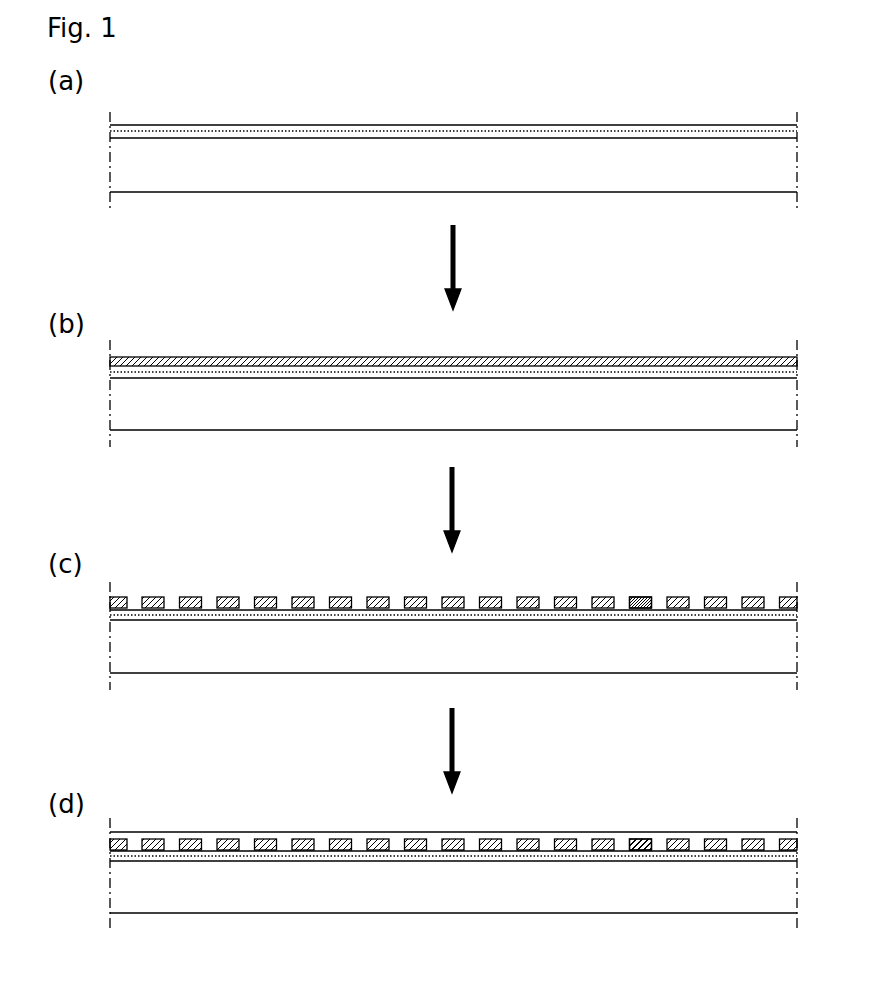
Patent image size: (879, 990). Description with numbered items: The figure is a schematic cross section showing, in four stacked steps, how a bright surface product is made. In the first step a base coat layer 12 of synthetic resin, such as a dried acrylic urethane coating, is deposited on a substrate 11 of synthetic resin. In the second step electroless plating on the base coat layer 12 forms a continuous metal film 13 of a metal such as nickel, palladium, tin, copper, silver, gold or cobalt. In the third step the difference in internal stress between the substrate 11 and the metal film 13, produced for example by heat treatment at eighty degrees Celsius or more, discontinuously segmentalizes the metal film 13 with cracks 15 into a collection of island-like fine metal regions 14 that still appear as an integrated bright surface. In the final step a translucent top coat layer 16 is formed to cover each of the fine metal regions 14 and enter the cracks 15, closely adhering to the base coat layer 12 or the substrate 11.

The substrate 11 is at (217, 184).
The base coat layer 12 is at (658, 137).
The metal film 13 is at (600, 358).
The fine metal regions 14 is at (600, 597).
The cracks 15 is at (658, 597).
The top coat layer 16 is at (320, 832).